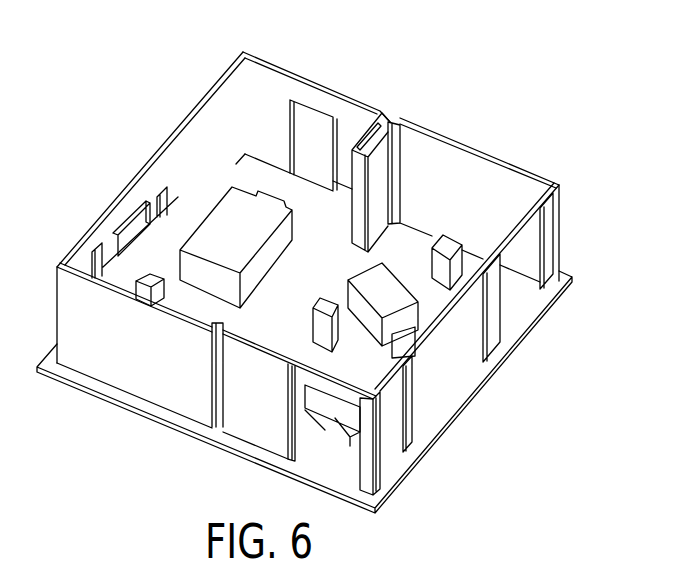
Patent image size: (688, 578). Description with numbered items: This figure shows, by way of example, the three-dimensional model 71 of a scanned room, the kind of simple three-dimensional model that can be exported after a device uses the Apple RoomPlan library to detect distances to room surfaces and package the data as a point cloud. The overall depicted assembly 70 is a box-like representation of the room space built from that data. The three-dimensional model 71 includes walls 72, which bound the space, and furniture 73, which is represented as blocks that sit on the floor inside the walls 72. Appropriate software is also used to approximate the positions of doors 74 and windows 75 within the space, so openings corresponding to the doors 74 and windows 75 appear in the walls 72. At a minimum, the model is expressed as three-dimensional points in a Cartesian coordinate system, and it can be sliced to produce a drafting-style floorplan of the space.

The base plate 70 is at (108, 182).
The three-dimensional model 71 is at (407, 81).
The walls 72 is at (548, 243).
The furniture 73 is at (270, 246).
The doors 74 is at (336, 157).
The windows 75 is at (156, 210).